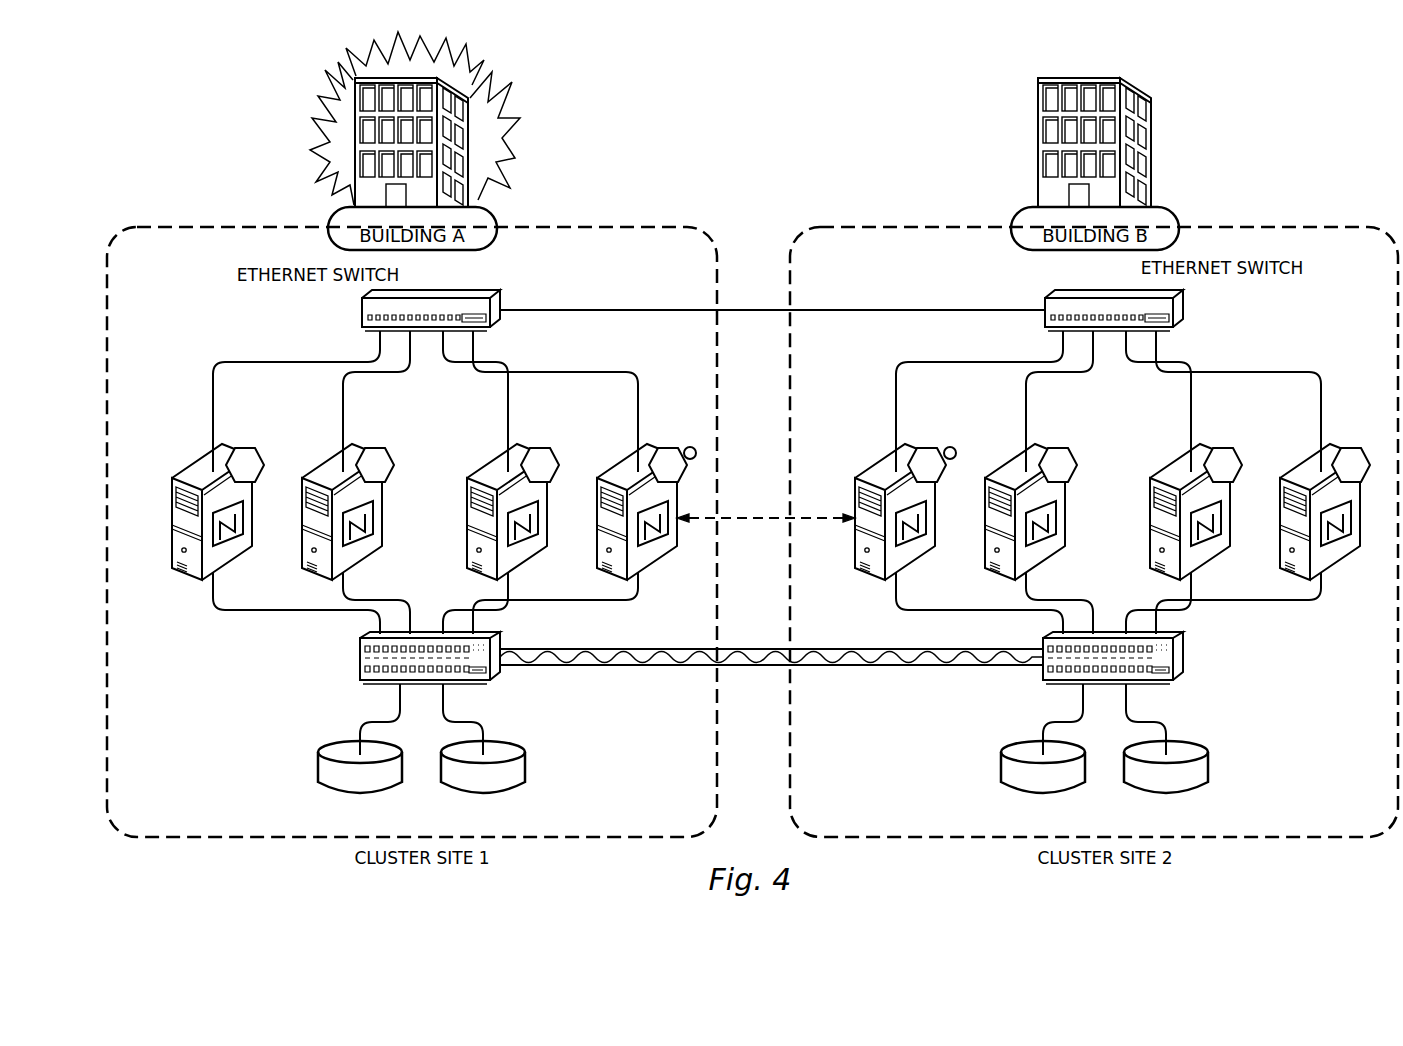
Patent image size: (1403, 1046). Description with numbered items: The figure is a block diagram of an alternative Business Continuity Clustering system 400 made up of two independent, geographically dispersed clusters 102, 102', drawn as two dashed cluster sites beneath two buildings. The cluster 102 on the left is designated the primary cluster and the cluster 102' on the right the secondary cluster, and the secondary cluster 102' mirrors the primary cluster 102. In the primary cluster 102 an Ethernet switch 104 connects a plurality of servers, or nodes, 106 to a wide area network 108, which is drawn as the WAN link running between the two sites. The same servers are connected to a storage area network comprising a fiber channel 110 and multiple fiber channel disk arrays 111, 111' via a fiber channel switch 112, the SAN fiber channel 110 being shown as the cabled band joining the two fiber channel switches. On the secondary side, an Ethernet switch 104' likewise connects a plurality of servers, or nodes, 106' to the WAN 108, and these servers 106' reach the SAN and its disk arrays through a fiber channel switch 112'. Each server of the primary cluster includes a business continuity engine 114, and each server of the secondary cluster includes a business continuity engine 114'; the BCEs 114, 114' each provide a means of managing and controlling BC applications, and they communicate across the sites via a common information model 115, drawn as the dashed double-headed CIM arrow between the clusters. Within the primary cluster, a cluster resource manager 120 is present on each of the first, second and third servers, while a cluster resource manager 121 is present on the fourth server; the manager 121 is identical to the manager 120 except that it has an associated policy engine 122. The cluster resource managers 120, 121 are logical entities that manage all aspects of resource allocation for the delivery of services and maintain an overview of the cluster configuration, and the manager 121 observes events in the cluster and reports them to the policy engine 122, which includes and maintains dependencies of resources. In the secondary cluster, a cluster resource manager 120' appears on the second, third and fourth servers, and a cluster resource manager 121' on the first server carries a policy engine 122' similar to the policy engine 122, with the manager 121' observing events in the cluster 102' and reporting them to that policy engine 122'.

The cluster system 400 is at (950, 88).
The cluster 102 is at (412, 503).
The cluster 102' is at (1094, 503).
The Ethernet switch 104 is at (397, 310).
The Ethernet switch 104' is at (1147, 307).
The server 106 is at (459, 549).
The server 106' is at (1145, 549).
The wide area network 108 is at (745, 313).
The storage area network fiber channel 110 is at (742, 667).
The fiber channel disk array 111 is at (388, 782).
The fiber channel disk array 111' is at (1140, 782).
The fiber channel switch 112 is at (361, 686).
The fiber channel switch 112' is at (1181, 686).
The business continuity engine 114 is at (402, 475).
The business continuity engine 114' is at (1085, 475).
The common information model 115 is at (748, 522).
The cluster resource manager 120 is at (392, 439).
The cluster resource manager 120' is at (1205, 439).
The cluster resource manager 121 is at (665, 423).
The cluster resource manager 121' is at (926, 439).
The policy engine 122 is at (690, 426).
The policy engine 122' is at (961, 477).